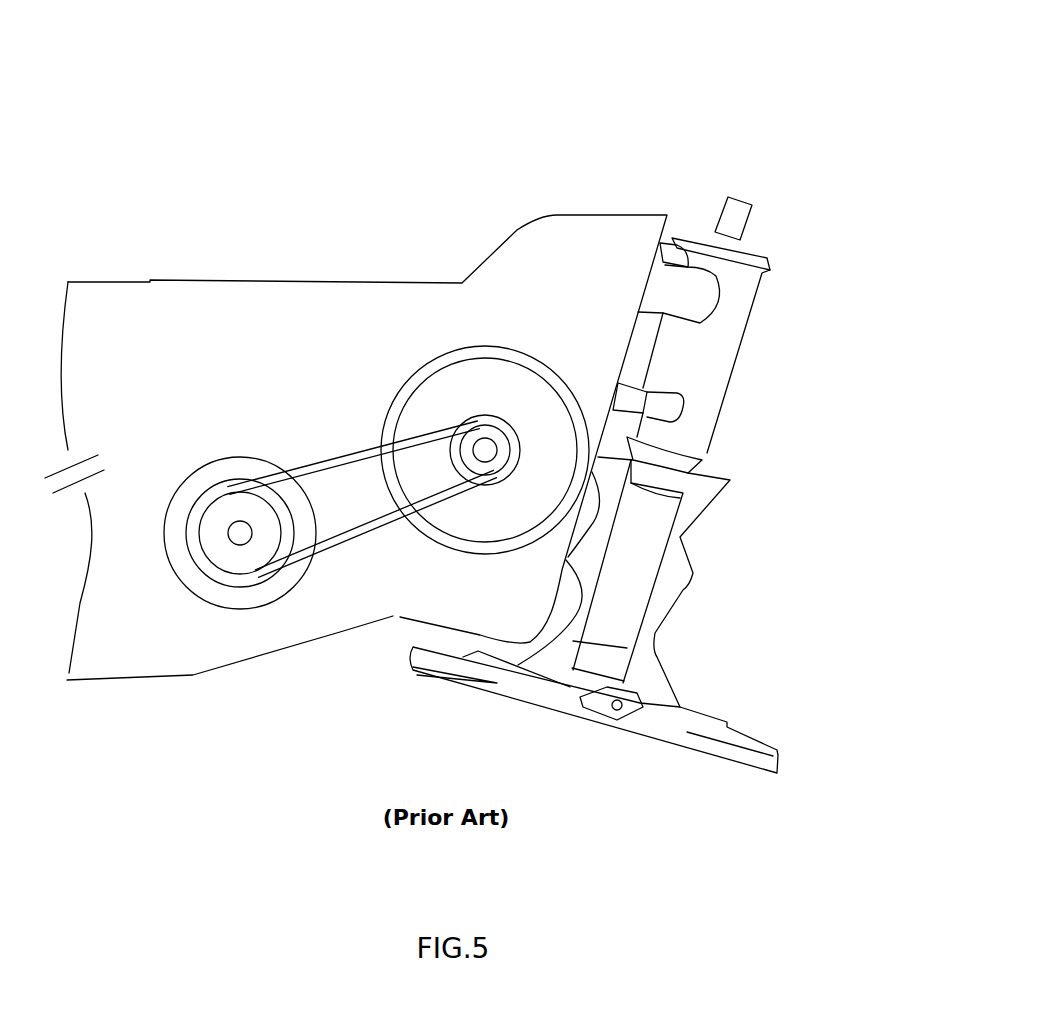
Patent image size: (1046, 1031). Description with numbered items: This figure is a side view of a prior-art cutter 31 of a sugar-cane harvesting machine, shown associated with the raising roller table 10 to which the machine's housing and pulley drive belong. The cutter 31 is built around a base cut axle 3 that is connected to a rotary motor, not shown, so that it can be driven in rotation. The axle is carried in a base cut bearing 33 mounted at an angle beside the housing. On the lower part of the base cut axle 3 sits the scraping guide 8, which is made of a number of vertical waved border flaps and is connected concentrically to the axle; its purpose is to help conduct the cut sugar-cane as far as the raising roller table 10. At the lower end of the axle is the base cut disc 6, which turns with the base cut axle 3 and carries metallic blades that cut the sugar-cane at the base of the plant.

The raising roller table 10 is at (625, 184).
The base cut bearing 33 is at (725, 343).
The base cut axle 3 is at (645, 531).
The scraping guide 8 is at (680, 592).
The base cut disc 6 is at (697, 720).
The cutter 31 is at (788, 484).